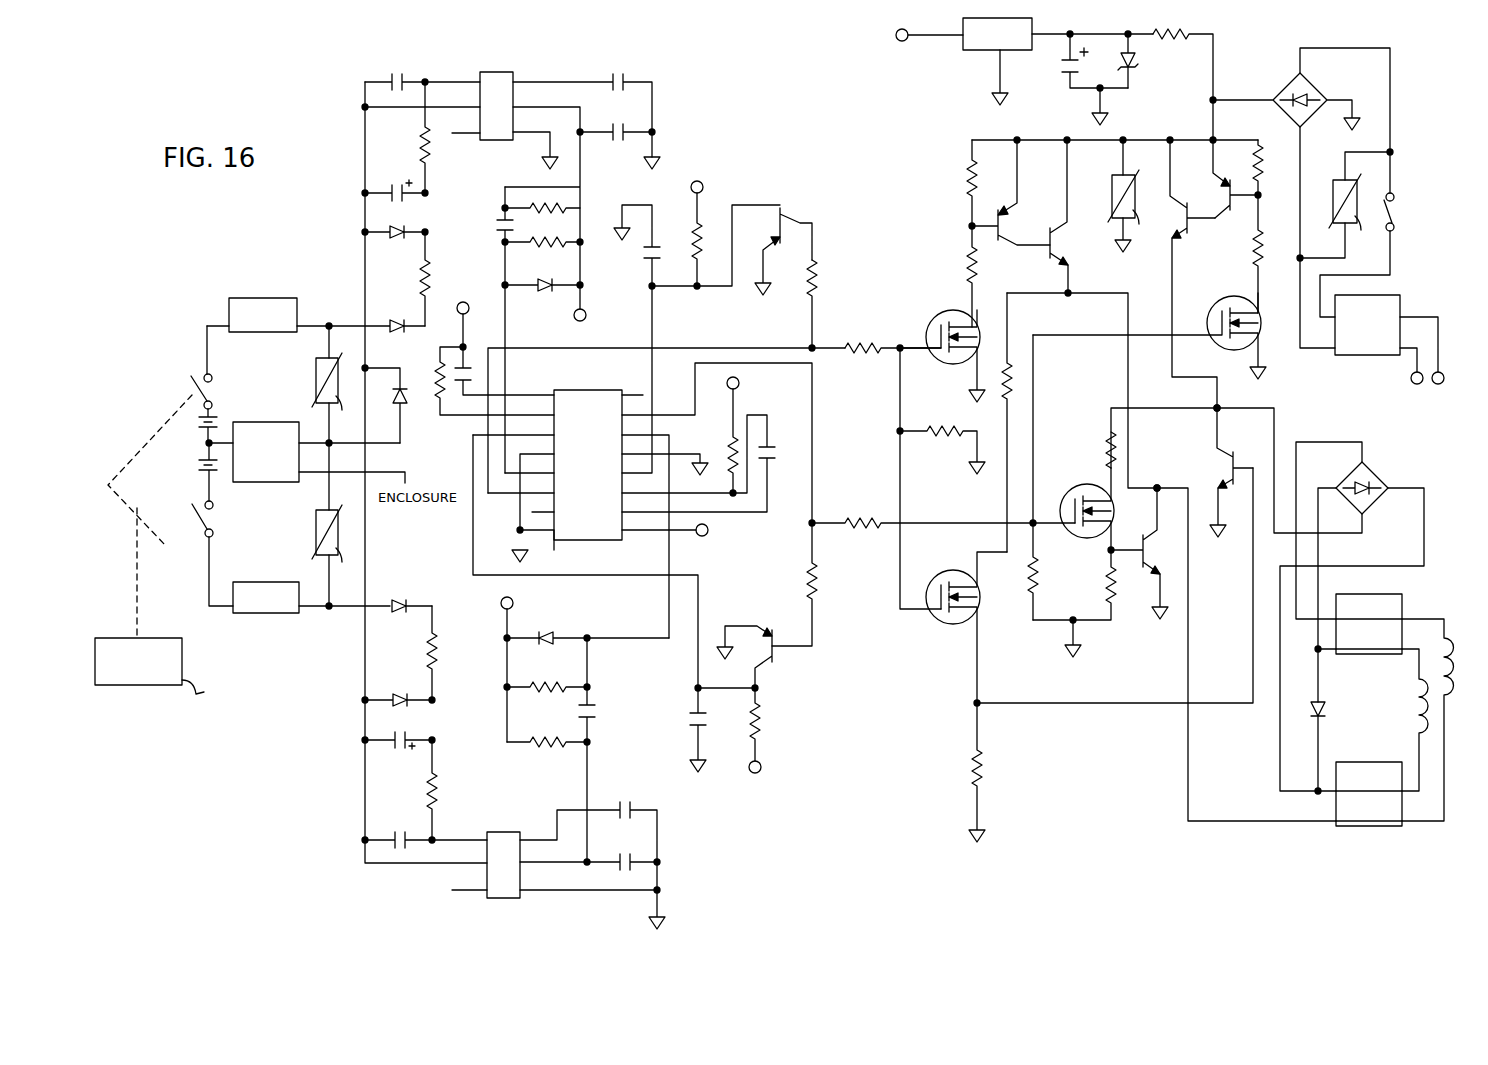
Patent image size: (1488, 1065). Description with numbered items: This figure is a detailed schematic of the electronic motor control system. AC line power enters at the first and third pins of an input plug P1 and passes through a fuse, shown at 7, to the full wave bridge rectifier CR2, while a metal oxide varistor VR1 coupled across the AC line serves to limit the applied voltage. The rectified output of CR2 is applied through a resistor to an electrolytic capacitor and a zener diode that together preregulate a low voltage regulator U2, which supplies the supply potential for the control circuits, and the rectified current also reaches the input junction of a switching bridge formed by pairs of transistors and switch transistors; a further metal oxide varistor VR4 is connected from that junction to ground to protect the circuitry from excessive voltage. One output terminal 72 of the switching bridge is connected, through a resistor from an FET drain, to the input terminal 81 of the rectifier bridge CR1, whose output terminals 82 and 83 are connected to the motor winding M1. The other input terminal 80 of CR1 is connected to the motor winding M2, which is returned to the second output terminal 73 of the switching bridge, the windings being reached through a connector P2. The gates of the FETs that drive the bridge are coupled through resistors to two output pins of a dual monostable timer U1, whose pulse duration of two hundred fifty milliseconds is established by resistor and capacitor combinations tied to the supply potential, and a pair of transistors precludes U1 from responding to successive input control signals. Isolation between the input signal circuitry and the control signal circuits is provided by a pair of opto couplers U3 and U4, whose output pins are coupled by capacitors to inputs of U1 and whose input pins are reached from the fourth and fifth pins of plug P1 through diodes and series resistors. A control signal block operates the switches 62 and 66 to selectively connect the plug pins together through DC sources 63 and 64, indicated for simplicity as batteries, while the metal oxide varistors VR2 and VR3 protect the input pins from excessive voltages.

The switch 62 is at (192, 382).
The DC source 63 is at (200, 462).
The DC source 64 is at (199, 436).
The switch / control signal 66 is at (202, 546).
The power switch 7 is at (1396, 206).
The output terminal of switching bridge 72 is at (1216, 408).
The output terminal of switching bridge 73 is at (1157, 486).
The input terminal of rectifier bridge 80 is at (1344, 461).
The input terminal of rectifier bridge 81 is at (1345, 530).
The output terminal of rectifier bridge 82 is at (1322, 595).
The output terminal of rectifier bridge 83 is at (1352, 639).
The dual monostable timer U1 is at (605, 472).
The low voltage regulator U2 is at (1006, 61).
The opto coupler U3 is at (500, 912).
The opto coupler U4 is at (478, 44).
The input plug P1 is at (264, 300).
The connector P2 is at (1376, 840).
The motor winding M1 is at (1412, 730).
The motor winding M2 is at (1448, 702).
The rectifier bridge CR1 is at (1326, 708).
The full wave bridge rectifier CR2 is at (1314, 86).
The MOV VR1 is at (1336, 182).
The MOV VR2 is at (316, 535).
The MOV VR3 is at (316, 381).
The MOV VR4 is at (1110, 194).